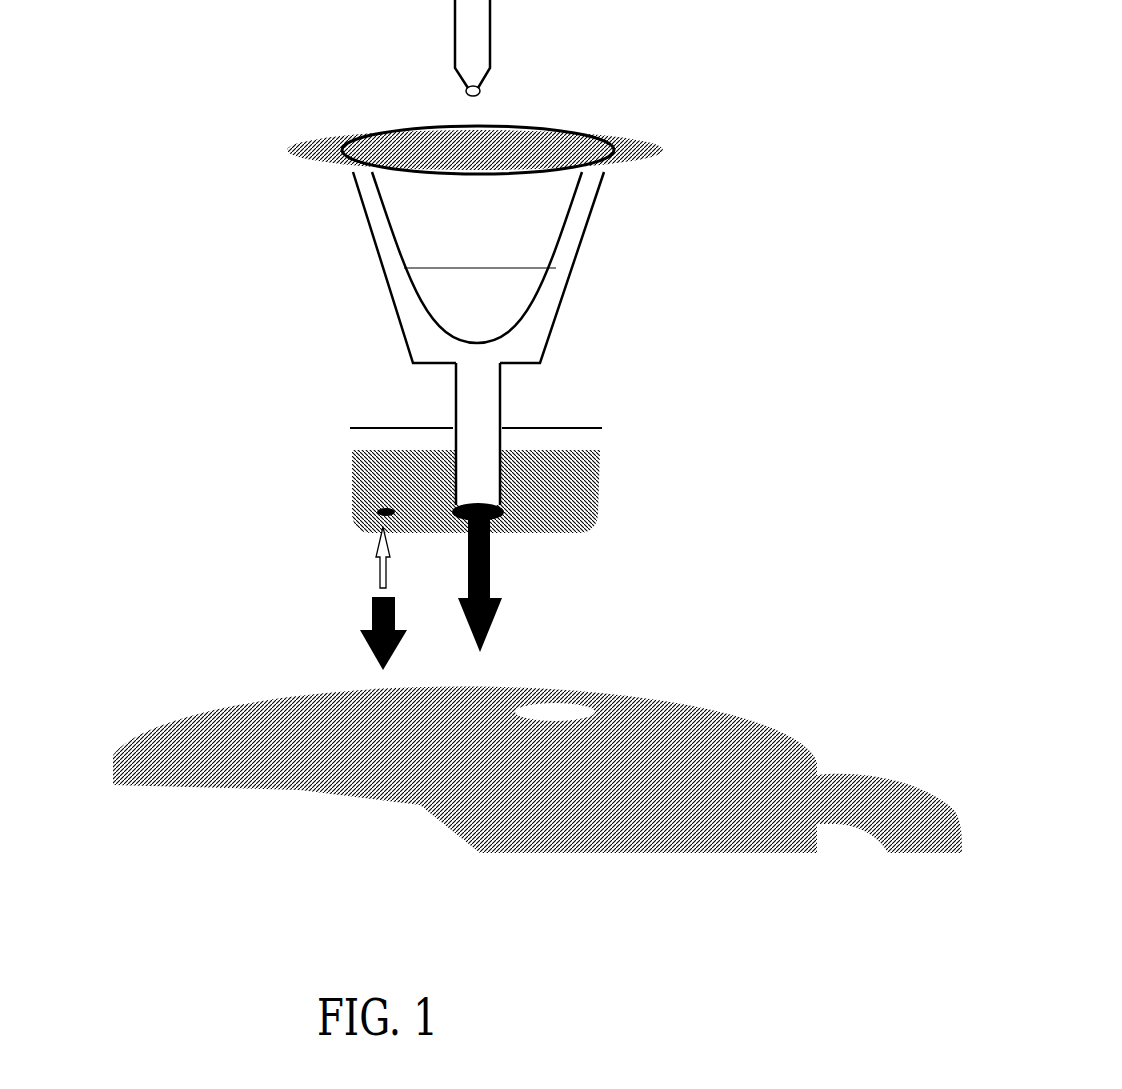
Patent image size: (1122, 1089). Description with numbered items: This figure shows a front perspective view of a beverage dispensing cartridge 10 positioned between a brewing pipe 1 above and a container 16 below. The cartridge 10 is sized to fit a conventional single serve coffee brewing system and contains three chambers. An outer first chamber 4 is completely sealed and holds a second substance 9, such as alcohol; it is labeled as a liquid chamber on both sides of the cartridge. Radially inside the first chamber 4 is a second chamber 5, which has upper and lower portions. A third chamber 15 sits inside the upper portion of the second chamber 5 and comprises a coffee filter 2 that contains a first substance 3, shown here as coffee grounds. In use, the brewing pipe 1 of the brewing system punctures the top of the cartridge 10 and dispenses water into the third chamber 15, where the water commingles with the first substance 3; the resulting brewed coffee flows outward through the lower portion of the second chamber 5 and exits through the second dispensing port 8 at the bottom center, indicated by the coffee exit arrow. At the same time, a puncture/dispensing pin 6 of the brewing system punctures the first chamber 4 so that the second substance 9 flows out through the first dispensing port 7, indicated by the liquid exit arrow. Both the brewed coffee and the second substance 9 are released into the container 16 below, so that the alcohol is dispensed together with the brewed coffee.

The brewing pipe 1 is at (497, 40).
The coffee filter 2 is at (547, 270).
The first substance 3 is at (468, 300).
The first chamber 4 is at (363, 310).
The second chamber 5 is at (407, 293).
The puncture/dispensing pin 6 is at (367, 563).
The first dispensing port 7 is at (388, 505).
The second dispensing port 8 is at (503, 513).
The second substance 9 is at (370, 428).
The cartridge 10 is at (272, 134).
The third chamber 15 is at (393, 238).
The container 16 is at (622, 707).